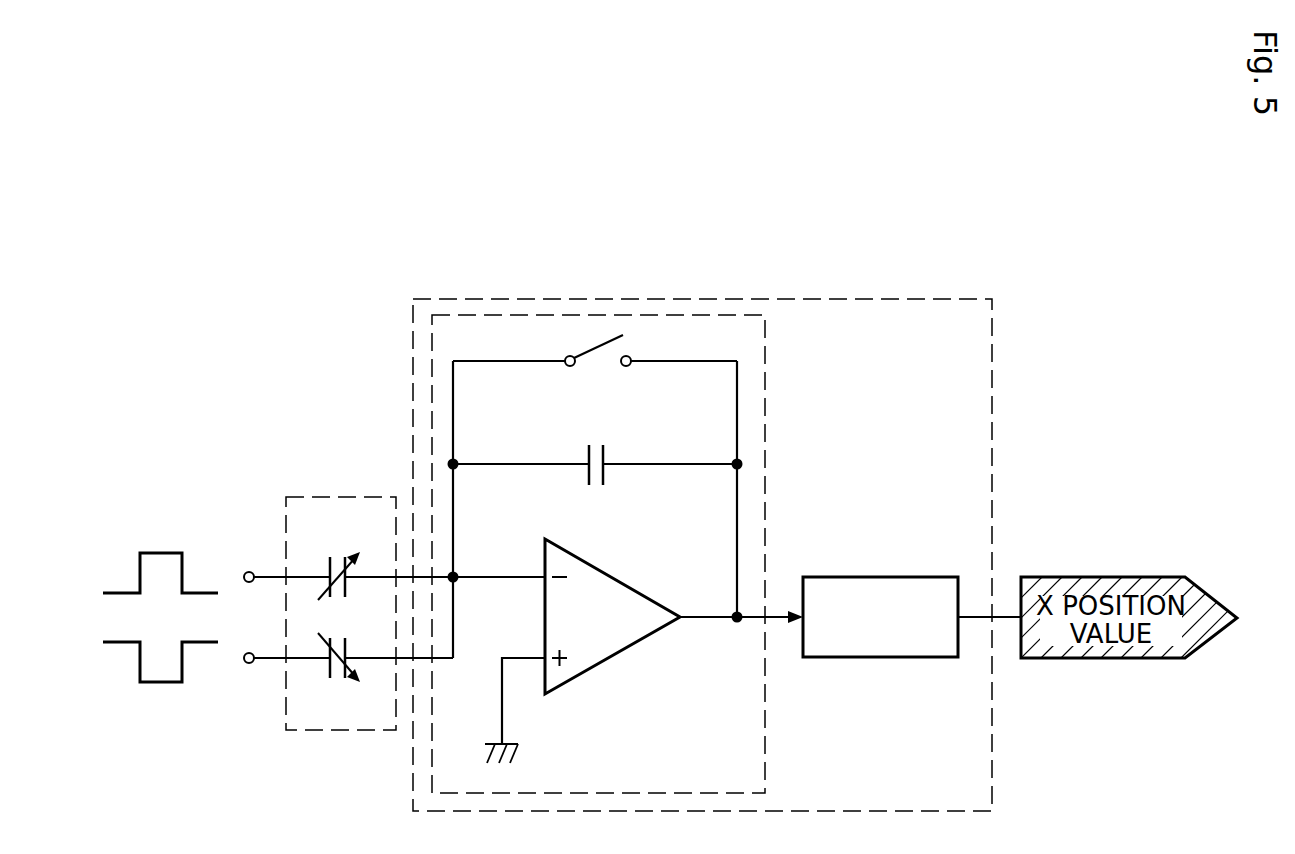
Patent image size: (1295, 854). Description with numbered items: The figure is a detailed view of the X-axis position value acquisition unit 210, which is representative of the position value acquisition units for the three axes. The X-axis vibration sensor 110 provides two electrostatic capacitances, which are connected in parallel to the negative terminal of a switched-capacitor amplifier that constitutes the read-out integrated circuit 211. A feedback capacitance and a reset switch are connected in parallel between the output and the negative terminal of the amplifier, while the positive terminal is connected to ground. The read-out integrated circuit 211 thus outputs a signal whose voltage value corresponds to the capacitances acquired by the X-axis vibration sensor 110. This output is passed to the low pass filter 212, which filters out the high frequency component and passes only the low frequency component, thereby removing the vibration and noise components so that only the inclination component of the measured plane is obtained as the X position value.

The X-axis vibration sensor 110 is at (357, 497).
The X-axis position value acquisition unit 210 is at (992, 357).
The read-out integrated circuit 211 is at (665, 315).
The low pass filter 212 is at (879, 577).